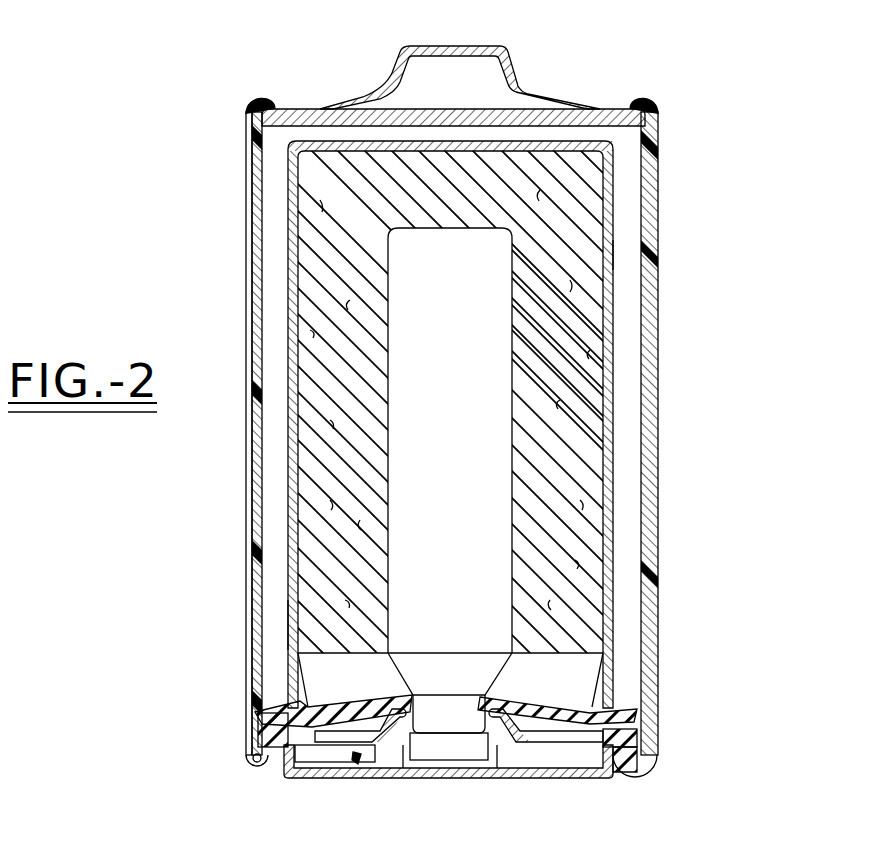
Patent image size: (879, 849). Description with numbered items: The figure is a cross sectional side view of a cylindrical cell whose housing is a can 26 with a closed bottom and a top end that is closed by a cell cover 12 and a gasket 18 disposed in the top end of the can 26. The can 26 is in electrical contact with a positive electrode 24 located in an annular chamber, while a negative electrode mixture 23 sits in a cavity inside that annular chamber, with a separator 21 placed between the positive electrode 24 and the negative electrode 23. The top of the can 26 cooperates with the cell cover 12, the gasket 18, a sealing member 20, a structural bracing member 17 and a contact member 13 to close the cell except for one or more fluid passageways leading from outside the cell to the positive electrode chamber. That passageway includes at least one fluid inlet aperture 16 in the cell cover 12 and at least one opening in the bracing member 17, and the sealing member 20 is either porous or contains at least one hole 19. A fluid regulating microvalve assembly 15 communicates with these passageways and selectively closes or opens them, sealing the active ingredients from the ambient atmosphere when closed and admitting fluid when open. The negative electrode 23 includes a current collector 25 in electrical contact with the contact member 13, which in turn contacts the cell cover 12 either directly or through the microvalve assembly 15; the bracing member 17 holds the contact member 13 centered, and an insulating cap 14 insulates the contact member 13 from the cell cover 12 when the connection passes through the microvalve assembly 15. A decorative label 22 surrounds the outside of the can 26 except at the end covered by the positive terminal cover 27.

The cell cover 12 is at (556, 773).
The contact member 13 is at (468, 752).
The insulating cap 14 is at (452, 763).
The fluid regulating microvalve assembly 15 is at (356, 756).
The fluid inlet aperture 16 is at (612, 768).
The structural bracing member 17 is at (310, 745).
The gasket 18 is at (253, 735).
The hole 19 is at (283, 715).
The sealing member 20 is at (297, 690).
The separator 21 is at (612, 258).
The decorative label 22 is at (658, 404).
The negative electrode mixture 23 is at (584, 356).
The positive electrode 24 is at (628, 310).
The current collector 25 is at (423, 294).
The can 26 is at (262, 140).
The positive terminal cover 27 is at (392, 67).